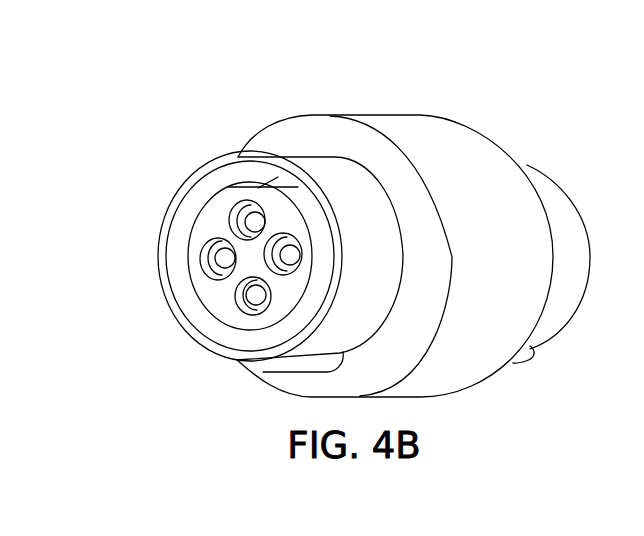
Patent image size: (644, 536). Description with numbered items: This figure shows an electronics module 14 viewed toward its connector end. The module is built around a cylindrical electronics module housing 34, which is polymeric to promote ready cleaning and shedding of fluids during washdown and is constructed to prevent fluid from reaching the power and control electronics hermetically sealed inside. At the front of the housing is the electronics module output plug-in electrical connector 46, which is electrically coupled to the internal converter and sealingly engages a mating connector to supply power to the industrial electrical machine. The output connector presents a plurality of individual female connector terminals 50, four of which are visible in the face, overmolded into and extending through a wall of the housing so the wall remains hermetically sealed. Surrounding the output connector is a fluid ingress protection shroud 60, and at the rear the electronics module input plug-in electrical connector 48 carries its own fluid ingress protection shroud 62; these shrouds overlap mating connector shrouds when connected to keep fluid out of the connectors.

The electronics module 14 is at (537, 90).
The electronics module housing 34 is at (428, 115).
The electronics module output plug-in electrical connector 46 is at (142, 342).
The electronics module input plug-in electrical connector 48 is at (567, 172).
The female connector terminals 50 is at (255, 213).
The fluid ingress protection shroud 60 is at (193, 184).
The fluid ingress protection shroud 62 is at (582, 208).